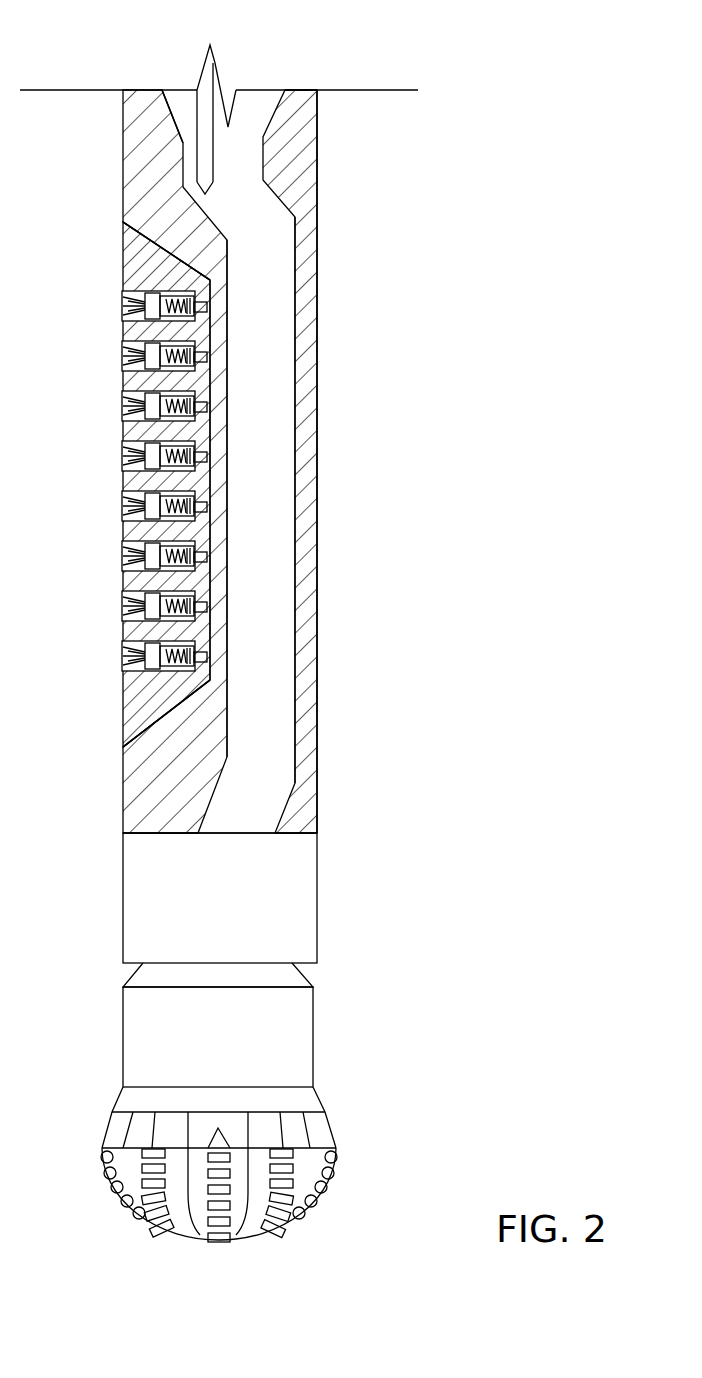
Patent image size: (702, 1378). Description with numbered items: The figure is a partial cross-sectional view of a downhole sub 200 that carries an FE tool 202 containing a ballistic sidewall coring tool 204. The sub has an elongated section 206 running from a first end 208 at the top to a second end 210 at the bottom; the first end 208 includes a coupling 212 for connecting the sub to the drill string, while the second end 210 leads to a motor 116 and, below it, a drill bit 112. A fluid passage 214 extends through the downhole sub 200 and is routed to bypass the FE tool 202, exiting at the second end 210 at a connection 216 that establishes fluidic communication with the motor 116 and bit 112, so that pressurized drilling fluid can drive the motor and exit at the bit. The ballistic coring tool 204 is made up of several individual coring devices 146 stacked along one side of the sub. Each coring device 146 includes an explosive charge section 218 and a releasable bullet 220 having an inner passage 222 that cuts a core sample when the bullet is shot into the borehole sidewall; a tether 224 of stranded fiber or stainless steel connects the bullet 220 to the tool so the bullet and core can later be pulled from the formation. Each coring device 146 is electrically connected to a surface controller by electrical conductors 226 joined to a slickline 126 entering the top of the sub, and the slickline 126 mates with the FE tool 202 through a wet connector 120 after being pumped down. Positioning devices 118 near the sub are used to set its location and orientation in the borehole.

The drill bit 112 is at (106, 1131).
The motor 116 is at (123, 898).
The positioning devices 118 is at (123, 1042).
The wet connector 120 is at (213, 178).
The slickline 126 is at (200, 127).
The coring devices 146 is at (122, 468).
The downhole sub 200 is at (318, 204).
The FE tool 202 is at (123, 158).
The ballistic sidewall coring tool 204 is at (123, 243).
The elongated section 206 is at (318, 565).
The first end 208 is at (292, 89).
The second end 210 is at (317, 833).
The coupling 212 is at (168, 112).
The fluid passage 214 is at (293, 423).
The connection 216 is at (148, 720).
The explosive charge section 218 is at (180, 690).
The releasable bullet 220 is at (155, 545).
The inner passage 222 is at (133, 645).
The tether 224 is at (173, 597).
The electrical conductors 226 is at (135, 442).